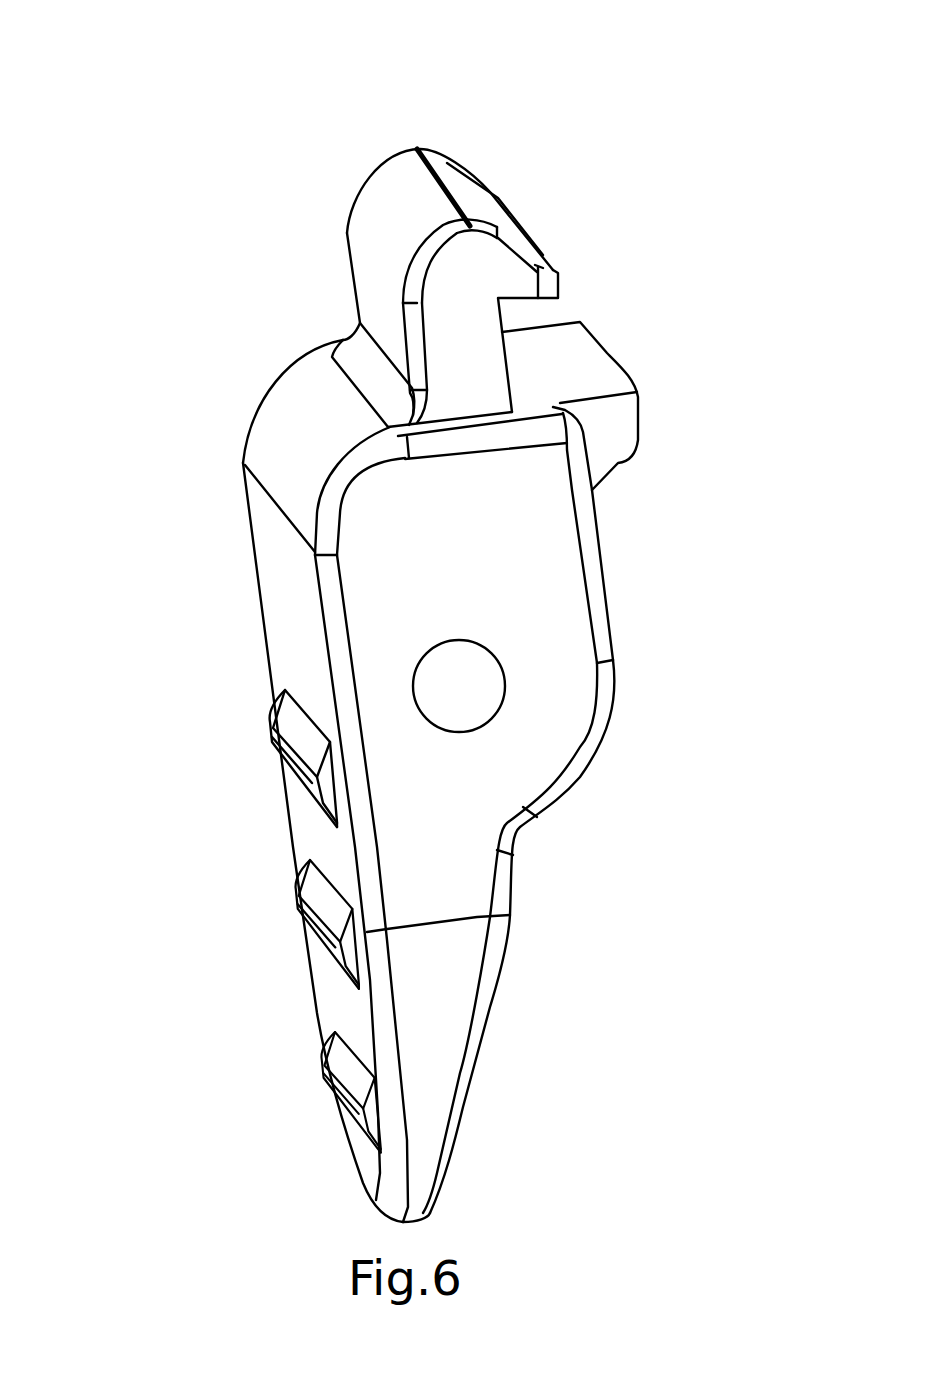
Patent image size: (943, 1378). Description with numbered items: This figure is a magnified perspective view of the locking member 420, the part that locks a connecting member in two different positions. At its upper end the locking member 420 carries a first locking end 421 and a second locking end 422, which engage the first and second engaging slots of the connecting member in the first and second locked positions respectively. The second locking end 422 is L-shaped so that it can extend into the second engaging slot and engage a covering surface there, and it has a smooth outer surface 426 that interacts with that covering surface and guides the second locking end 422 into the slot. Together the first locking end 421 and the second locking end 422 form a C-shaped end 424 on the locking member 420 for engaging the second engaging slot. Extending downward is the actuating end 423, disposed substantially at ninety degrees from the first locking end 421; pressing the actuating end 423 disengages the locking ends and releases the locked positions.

The locking member 420 is at (232, 210).
The first locking end 421 is at (620, 420).
The second locking end 422 is at (560, 273).
The actuating end 423 is at (332, 1013).
The C-shaped end 424 is at (493, 333).
The smooth outer surface 426 is at (448, 177).